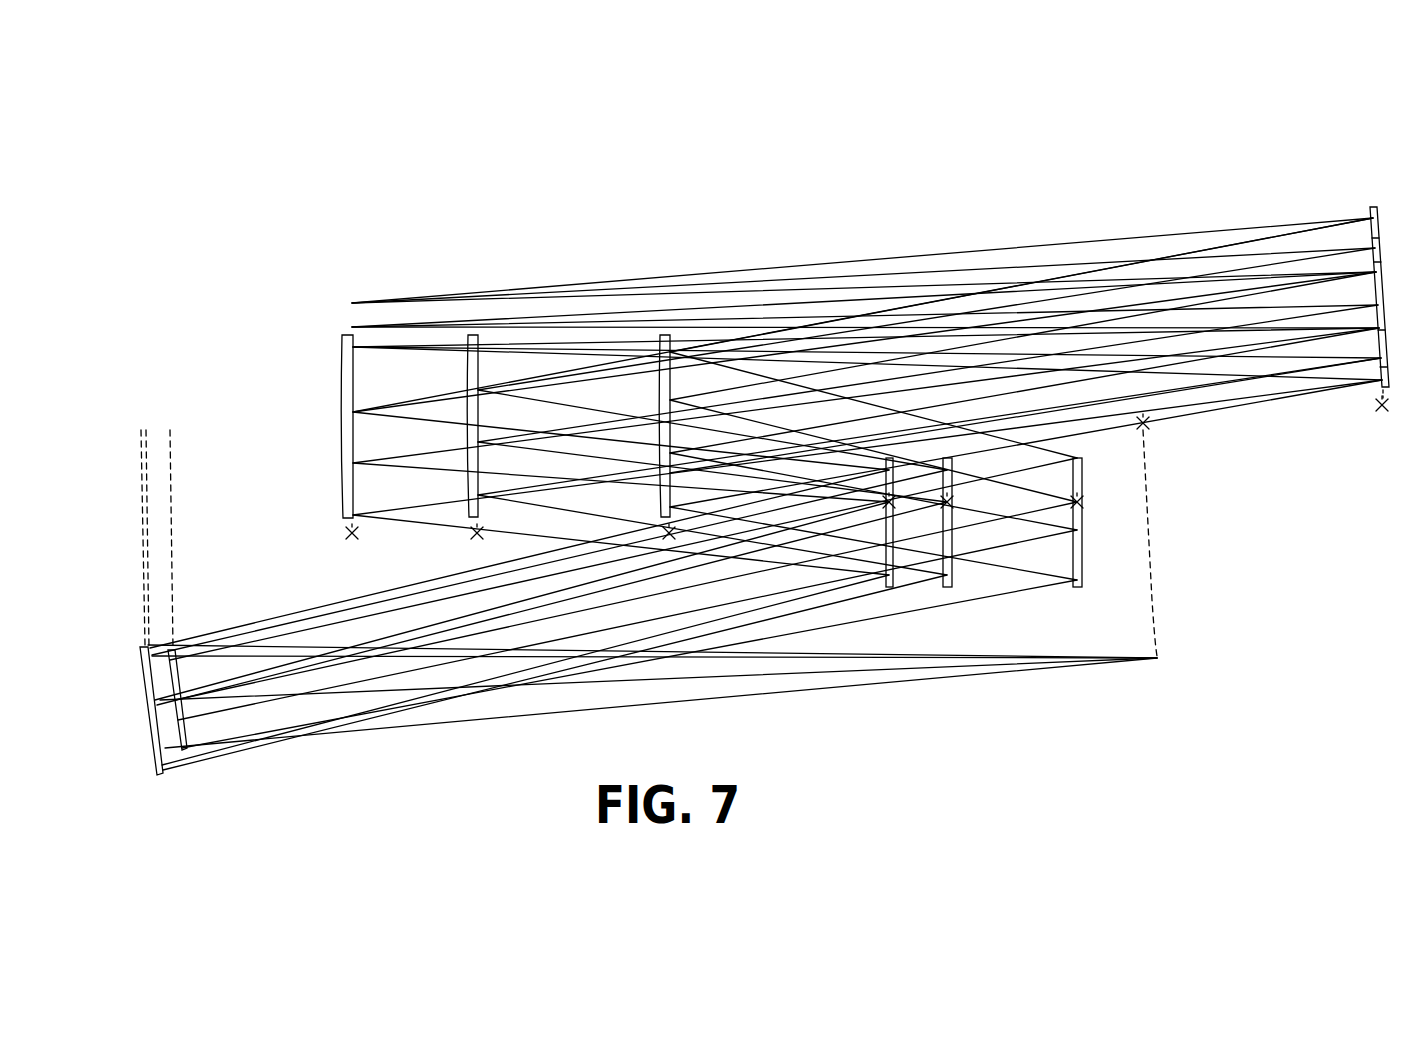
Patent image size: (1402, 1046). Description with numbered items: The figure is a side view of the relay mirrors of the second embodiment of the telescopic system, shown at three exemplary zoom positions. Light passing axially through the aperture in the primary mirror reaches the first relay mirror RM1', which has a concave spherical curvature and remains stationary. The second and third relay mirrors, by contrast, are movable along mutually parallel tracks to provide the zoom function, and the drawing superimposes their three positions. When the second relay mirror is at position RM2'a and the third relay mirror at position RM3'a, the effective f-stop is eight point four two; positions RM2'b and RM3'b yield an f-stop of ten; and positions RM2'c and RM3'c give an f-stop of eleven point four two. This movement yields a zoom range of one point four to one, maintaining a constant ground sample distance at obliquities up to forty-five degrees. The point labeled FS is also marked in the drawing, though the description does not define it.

The first relay mirror RM1' is at (1344, 283).
The second relay mirror position a RM2'a is at (663, 372).
The second relay mirror position b RM2'b is at (449, 383).
The second relay mirror position c RM2'c is at (293, 437).
The third relay mirror position a RM3'a is at (588, 521).
The third relay mirror position b RM3'b is at (569, 531).
The third relay mirror position c RM3'c is at (516, 496).
The field stop / focal surface FS is at (1157, 658).